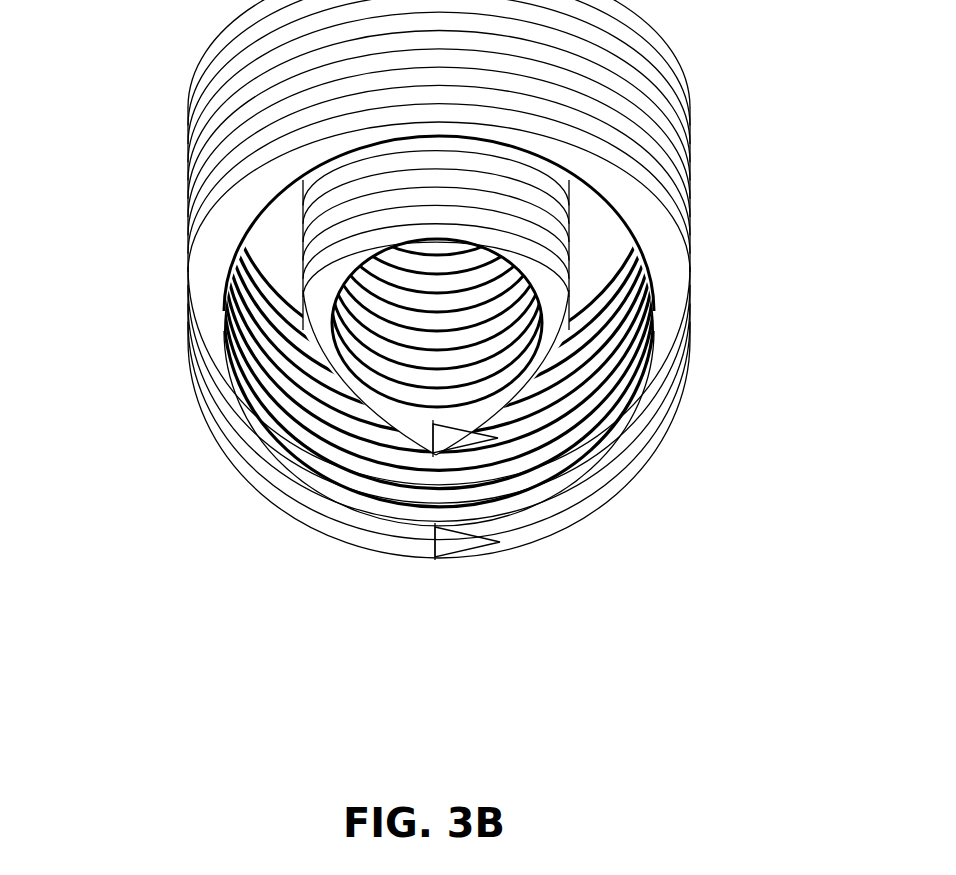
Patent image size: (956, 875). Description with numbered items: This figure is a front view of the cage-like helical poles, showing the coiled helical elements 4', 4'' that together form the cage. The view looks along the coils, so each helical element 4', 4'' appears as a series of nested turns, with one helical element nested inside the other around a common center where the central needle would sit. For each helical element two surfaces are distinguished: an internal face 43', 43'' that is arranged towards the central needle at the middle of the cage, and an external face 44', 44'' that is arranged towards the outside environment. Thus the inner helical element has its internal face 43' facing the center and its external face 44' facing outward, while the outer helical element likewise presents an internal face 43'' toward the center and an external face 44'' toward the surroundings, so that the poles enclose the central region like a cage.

The helical element 4' is at (496, 336).
The helical element 4'' is at (513, 279).
The internal face 43' is at (489, 414).
The internal face 43'' is at (439, 431).
The external face 44' is at (482, 439).
The external face 44'' is at (270, 530).